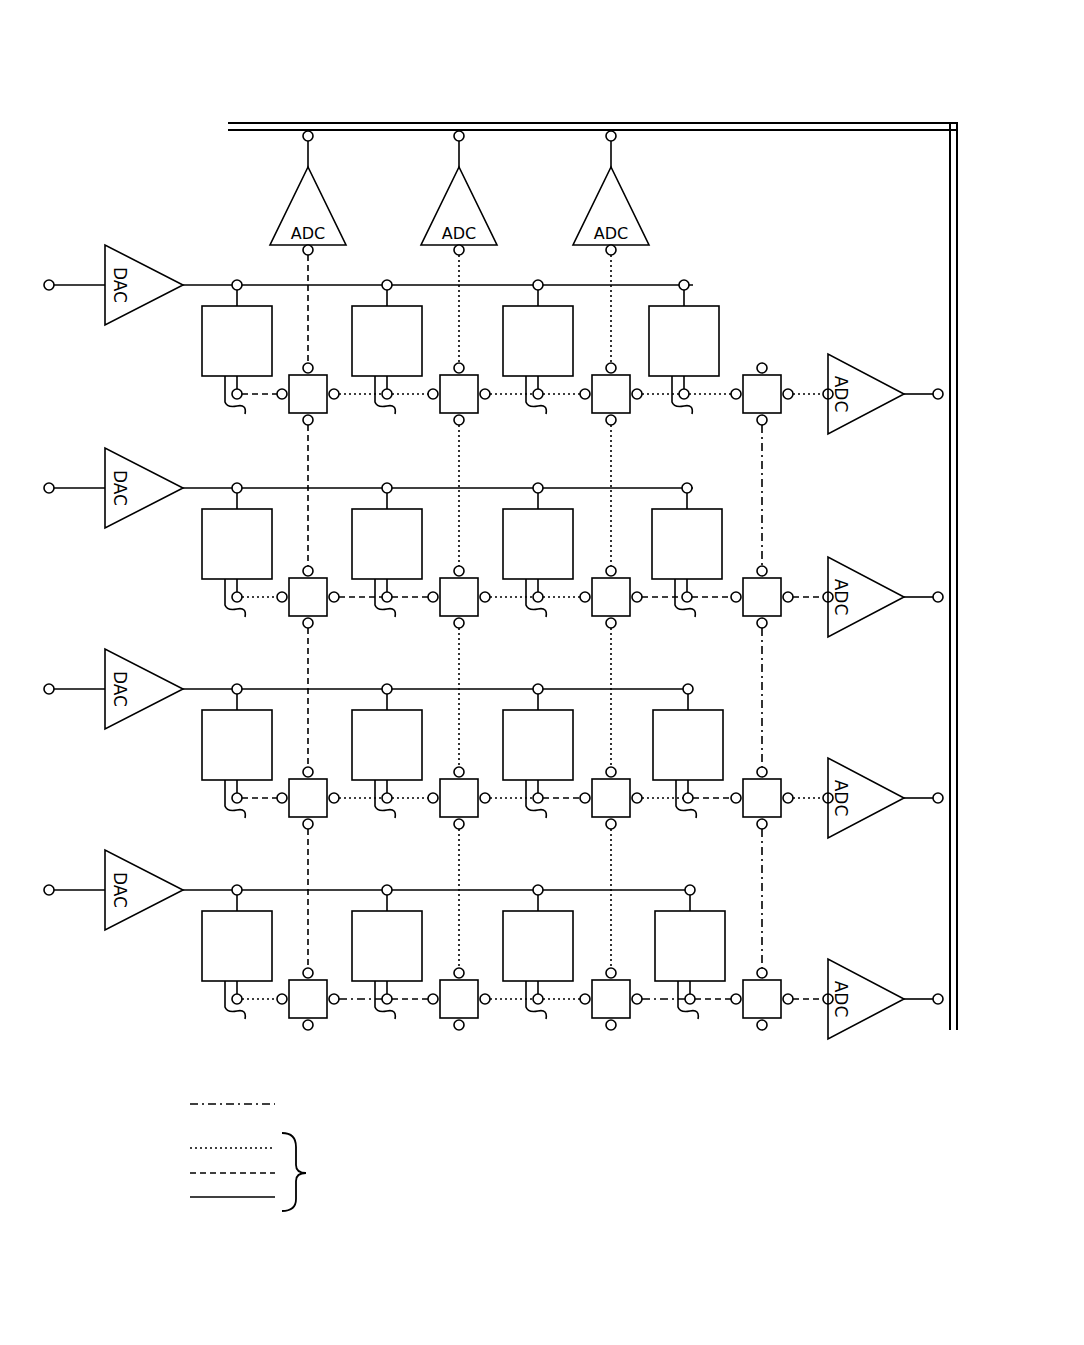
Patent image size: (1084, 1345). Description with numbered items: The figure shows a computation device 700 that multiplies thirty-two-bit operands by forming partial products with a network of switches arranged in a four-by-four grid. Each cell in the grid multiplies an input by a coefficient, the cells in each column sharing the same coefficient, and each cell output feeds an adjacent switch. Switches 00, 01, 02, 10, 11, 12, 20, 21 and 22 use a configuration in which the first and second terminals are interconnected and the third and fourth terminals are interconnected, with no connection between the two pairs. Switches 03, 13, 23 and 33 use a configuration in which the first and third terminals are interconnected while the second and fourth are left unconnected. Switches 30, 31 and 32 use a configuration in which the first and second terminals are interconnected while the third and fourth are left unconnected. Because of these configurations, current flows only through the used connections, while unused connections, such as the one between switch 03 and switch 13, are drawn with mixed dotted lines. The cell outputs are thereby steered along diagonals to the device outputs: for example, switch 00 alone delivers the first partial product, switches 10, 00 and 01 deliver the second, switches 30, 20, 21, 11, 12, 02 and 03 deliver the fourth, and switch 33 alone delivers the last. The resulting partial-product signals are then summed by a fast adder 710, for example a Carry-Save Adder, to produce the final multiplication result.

The computation device 700 is at (569, 87).
The fast adder 710 is at (750, 138).
The switch 00 is at (308, 394).
The switch 01 is at (459, 394).
The switch 02 is at (611, 394).
The switch 03 is at (762, 394).
The switch 10 is at (308, 597).
The switch 11 is at (459, 597).
The switch 12 is at (611, 597).
The switch 13 is at (762, 597).
The switch 20 is at (308, 798).
The switch 21 is at (459, 798).
The switch 22 is at (611, 798).
The switch 23 is at (762, 798).
The switch 30 is at (308, 999).
The switch 31 is at (459, 999).
The switch 32 is at (611, 999).
The switch 33 is at (762, 999).